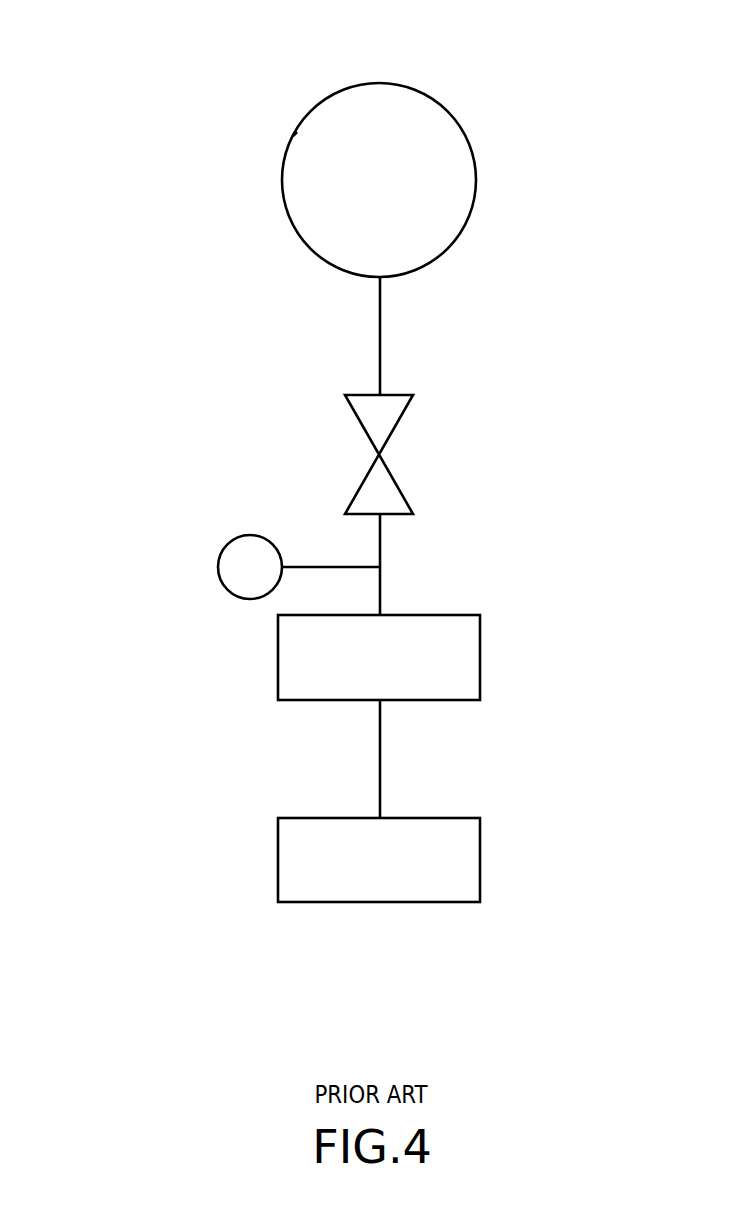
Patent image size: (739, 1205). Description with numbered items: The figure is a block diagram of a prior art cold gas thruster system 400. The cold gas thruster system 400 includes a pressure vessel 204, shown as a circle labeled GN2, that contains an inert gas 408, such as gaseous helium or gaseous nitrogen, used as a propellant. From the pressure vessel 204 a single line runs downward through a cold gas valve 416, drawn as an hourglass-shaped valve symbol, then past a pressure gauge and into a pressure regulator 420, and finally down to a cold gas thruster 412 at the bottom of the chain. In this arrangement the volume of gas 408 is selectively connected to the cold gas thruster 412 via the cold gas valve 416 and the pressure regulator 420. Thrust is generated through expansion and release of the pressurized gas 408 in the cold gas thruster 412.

The cold gas thruster system 400 is at (157, 343).
The pressure vessel 204 is at (390, 82).
The inert gas 408 is at (297, 132).
The cold gas valve 416 is at (397, 420).
The pressure regulator 420 is at (480, 653).
The cold gas thruster 412 is at (480, 858).